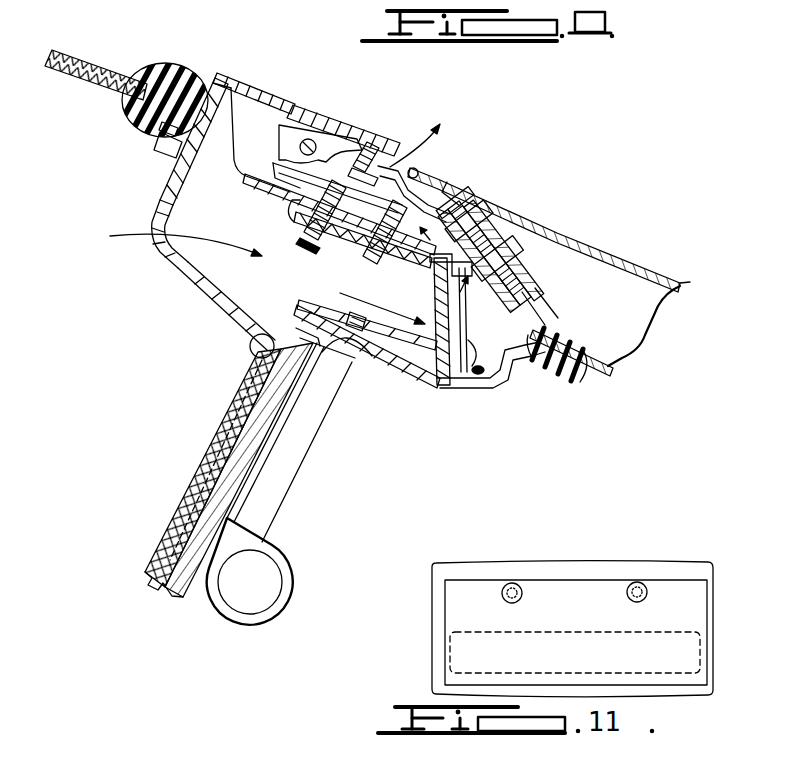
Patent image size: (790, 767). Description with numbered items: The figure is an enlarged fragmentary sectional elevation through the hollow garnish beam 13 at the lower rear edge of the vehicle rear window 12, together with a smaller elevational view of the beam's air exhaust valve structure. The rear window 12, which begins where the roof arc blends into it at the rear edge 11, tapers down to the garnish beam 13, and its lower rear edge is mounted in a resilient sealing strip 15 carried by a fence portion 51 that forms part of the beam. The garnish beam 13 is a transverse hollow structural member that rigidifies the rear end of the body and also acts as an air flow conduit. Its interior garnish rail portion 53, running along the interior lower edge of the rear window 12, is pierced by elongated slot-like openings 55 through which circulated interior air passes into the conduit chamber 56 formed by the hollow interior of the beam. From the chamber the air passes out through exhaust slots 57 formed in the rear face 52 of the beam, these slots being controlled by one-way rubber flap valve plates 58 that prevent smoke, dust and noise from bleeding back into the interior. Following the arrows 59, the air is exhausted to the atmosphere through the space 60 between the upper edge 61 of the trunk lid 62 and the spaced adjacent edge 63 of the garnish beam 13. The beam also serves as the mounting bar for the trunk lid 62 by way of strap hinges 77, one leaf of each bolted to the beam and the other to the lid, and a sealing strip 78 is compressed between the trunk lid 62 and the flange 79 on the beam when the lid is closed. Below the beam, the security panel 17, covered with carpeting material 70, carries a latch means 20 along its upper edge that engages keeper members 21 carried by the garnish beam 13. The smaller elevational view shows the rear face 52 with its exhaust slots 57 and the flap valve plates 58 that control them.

In FIG. 9, the rear edge 11 is at (478, 251).
In FIG. 9, the rear window 12 is at (68, 56).
In FIG. 9, the garnish beam 13 is at (252, 112).
In FIG. 9, the resilient sealing strip 15 is at (148, 63).
In FIG. 9, the security panel 17 is at (197, 537).
In FIG. 9, the latch means 20 is at (313, 421).
In FIG. 9, the keeper members 21 is at (370, 373).
In FIG. 9, the fence portion 51 is at (167, 129).
In FIG. 9, the rear face 52 is at (437, 293).
In FIG. 11, the rear face 52 is at (435, 599).
In FIG. 9, the interior garnish rail portion 53 is at (158, 183).
In FIG. 9, the slot-like openings 55 is at (158, 248).
In FIG. 9, the conduit chamber 56 is at (237, 281).
In FIG. 9, the exhaust slots 57 is at (440, 333).
In FIG. 11, the exhaust slots 57 is at (448, 647).
In FIG. 9, the flap valve plates 58 is at (456, 312).
In FIG. 11, the flap valve plates 58 is at (567, 592).
In FIG. 9, the arrows 59 is at (430, 157).
In FIG. 9, the space 60 is at (402, 163).
In FIG. 9, the upper edge 61 is at (440, 178).
In FIG. 9, the trunk lid 62 is at (640, 266).
In FIG. 9, the edge 63 is at (400, 140).
In FIG. 9, the carpeting material 70 is at (227, 437).
In FIG. 9, the strap hinges 77 is at (300, 136).
In FIG. 9, the sealing strip 78 is at (567, 370).
In FIG. 9, the flange 79 is at (533, 372).